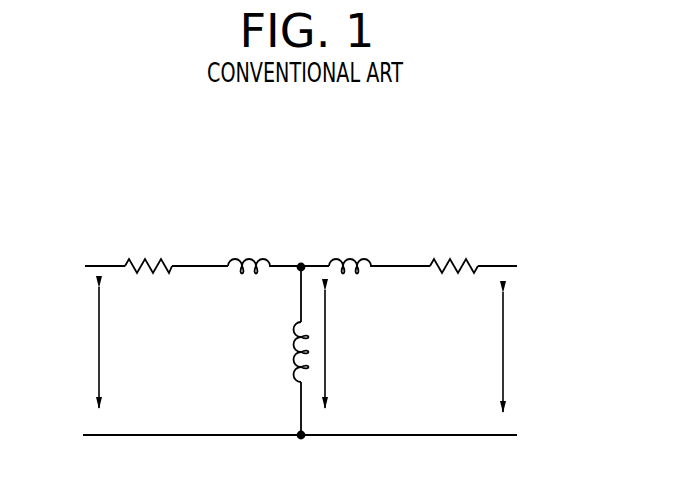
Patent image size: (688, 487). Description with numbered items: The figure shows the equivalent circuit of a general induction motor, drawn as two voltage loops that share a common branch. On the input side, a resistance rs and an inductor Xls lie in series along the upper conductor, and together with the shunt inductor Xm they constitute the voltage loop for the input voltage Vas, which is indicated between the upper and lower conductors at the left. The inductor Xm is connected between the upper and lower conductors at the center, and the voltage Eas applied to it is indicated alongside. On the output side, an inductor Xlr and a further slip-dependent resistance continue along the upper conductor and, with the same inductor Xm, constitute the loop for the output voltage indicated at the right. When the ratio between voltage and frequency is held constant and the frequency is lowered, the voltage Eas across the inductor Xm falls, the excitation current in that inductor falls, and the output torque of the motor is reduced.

The resistance rs is at (148, 249).
The inductor Xls is at (250, 250).
The inductor Xlr is at (352, 250).
The inductor Xm is at (284, 352).
The input voltage Vas is at (79, 347).
The voltage applied to the inductor Xm Eas is at (346, 349).